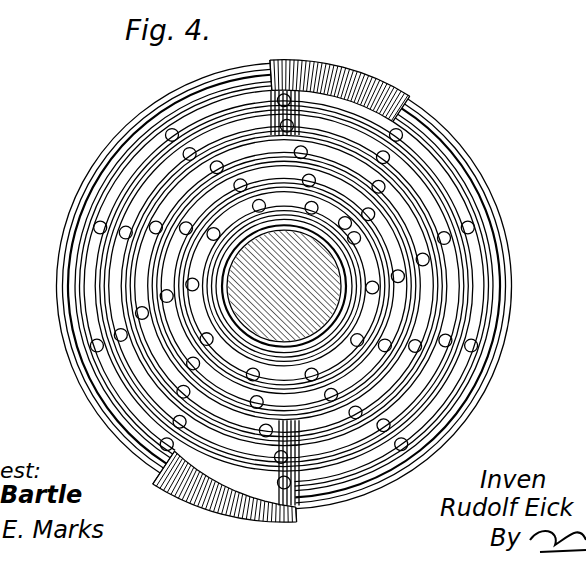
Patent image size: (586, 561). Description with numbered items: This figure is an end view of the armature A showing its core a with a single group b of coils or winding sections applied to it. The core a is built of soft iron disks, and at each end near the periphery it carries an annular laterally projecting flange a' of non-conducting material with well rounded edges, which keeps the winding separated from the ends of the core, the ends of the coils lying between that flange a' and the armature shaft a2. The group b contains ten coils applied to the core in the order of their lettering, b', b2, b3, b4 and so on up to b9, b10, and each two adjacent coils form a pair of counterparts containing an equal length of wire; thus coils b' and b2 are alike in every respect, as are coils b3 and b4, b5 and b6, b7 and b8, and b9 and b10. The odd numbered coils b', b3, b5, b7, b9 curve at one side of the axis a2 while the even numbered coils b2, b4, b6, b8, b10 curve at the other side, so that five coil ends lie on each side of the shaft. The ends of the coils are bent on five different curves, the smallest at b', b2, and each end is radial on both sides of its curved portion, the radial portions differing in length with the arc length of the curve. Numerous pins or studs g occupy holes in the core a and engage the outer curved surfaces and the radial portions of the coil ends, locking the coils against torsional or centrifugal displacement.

The armature A is at (283, 285).
The core a is at (284, 286).
The annular laterally projecting flange a' is at (283, 285).
The armature shaft a2 is at (284, 286).
The group of coils b is at (281, 285).
The coil b' is at (424, 288).
The coil b2 is at (207, 257).
The coil b3 is at (390, 302).
The coil b4 is at (180, 267).
The coil b5 is at (418, 289).
The coil b6 is at (148, 288).
The coil b7 is at (440, 270).
The coil b8 is at (127, 308).
The coil b9 is at (465, 243).
The coil b10 is at (100, 337).
The pins or studs g is at (165, 127).